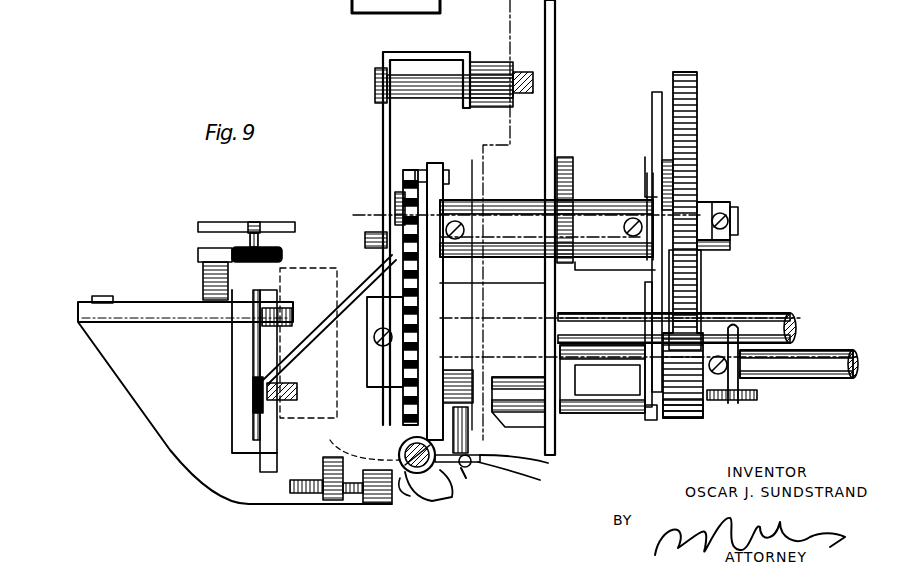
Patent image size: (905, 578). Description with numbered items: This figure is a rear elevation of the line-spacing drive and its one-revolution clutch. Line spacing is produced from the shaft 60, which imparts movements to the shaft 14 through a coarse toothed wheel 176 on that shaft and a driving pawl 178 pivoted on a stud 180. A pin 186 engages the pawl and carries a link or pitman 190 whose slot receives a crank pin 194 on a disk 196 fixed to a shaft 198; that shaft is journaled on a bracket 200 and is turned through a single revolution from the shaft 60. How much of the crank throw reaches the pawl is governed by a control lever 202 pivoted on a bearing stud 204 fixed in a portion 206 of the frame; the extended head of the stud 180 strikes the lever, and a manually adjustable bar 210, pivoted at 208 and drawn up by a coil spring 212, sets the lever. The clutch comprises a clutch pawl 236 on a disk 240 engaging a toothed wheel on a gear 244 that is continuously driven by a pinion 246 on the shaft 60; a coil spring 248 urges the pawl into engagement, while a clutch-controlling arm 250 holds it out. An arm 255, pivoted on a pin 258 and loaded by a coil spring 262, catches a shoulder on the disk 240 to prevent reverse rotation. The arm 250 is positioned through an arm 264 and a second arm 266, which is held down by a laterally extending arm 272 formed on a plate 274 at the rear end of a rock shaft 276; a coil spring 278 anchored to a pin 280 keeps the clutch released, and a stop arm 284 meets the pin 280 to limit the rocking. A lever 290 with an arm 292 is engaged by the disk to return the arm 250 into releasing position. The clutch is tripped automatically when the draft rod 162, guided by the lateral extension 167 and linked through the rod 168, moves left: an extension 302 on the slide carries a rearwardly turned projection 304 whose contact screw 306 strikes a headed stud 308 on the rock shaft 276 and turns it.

The shaft 14 is at (752, 322).
The shaft 60 is at (812, 350).
The draft rod 162 is at (333, 298).
The lateral extension 167 is at (247, 310).
The longitudinally movable rod 168 is at (282, 250).
The coarse toothed wheel 176 is at (405, 328).
The driving pawl 178 is at (405, 178).
The stud 180 is at (372, 232).
The pin 186 is at (398, 200).
The link or pitman 190 is at (422, 168).
The crank pin 194 is at (390, 256).
The disk 196 is at (205, 250).
The shaft 198 is at (740, 220).
The bracket 200 is at (547, 52).
The control lever 202 is at (384, 130).
The bearing stud 204 is at (375, 78).
The portion of the line-space frame 206 is at (522, 24).
The pivotal connection 208 is at (255, 402).
The manually adjustable bar 210 is at (334, 8).
The coil spring 212 is at (245, 238).
The clutch pawl 236 is at (692, 274).
The disk 240 is at (657, 92).
The gear 244 is at (690, 84).
The pinion 246 is at (692, 421).
The coil spring 248 is at (673, 190).
The clutch-controlling arm 250 is at (655, 422).
The arm 255 is at (642, 185).
The pin 258 is at (590, 225).
The coil spring 262 is at (568, 162).
The arm 264 is at (505, 476).
The second arm 266 is at (529, 470).
The laterally extending arm 272 is at (470, 440).
The plate 274 is at (406, 447).
The rock shaft 276 is at (345, 448).
The coil spring 278 is at (468, 470).
The pin 280 is at (468, 466).
The stop arm 284 is at (434, 501).
The lever 290 is at (606, 424).
The arm 292 is at (645, 297).
The extension 302 is at (166, 436).
The rearwardly turned projection 304 is at (323, 470).
The contact screw 306 is at (347, 497).
The headed stud 308 is at (403, 492).